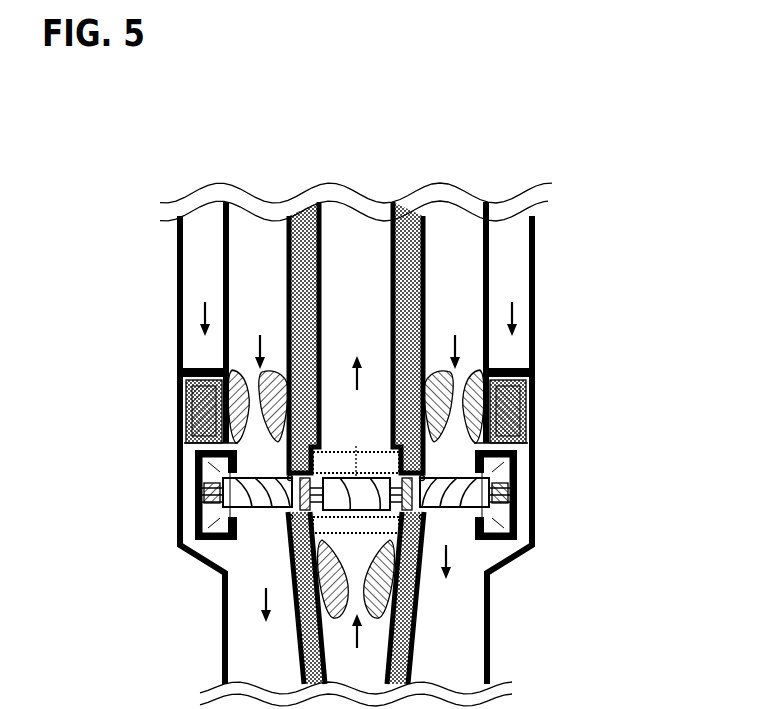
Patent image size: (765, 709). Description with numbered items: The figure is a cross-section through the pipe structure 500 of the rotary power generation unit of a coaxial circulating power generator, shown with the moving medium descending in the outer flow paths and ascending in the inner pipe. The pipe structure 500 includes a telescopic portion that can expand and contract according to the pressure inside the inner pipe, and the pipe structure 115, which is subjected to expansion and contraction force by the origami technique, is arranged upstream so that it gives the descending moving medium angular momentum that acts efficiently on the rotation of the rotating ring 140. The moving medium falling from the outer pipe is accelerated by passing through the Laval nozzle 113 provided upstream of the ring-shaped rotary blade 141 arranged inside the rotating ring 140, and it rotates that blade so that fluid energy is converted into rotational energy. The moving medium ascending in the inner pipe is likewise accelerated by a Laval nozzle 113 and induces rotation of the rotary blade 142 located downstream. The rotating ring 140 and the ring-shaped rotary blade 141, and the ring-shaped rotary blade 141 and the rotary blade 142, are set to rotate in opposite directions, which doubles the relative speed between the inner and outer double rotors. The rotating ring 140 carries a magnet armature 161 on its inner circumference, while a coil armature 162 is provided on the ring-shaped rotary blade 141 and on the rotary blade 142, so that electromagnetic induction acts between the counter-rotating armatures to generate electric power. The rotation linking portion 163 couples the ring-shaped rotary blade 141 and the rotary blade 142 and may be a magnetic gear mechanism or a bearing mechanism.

The pipe structure 500 is at (565, 157).
The Laval nozzle 113 is at (257, 422).
The pipe structure 115 is at (209, 365).
The rotating ring 140 is at (520, 465).
The ring-shaped rotary blade 141 is at (400, 608).
The rotary blade 142 is at (355, 509).
The magnet armature 161 is at (497, 524).
The coil armature 162 is at (481, 522).
The rotation linking portion 163 is at (398, 473).